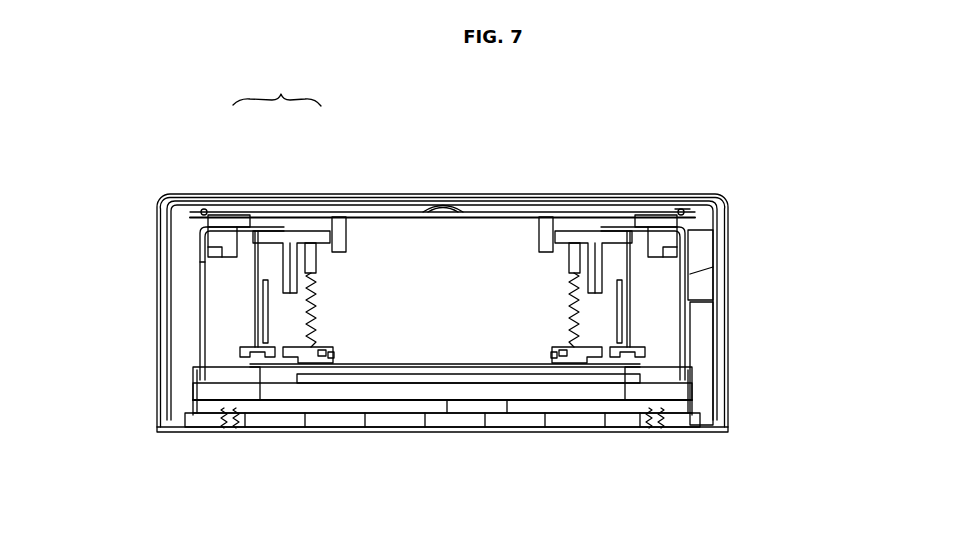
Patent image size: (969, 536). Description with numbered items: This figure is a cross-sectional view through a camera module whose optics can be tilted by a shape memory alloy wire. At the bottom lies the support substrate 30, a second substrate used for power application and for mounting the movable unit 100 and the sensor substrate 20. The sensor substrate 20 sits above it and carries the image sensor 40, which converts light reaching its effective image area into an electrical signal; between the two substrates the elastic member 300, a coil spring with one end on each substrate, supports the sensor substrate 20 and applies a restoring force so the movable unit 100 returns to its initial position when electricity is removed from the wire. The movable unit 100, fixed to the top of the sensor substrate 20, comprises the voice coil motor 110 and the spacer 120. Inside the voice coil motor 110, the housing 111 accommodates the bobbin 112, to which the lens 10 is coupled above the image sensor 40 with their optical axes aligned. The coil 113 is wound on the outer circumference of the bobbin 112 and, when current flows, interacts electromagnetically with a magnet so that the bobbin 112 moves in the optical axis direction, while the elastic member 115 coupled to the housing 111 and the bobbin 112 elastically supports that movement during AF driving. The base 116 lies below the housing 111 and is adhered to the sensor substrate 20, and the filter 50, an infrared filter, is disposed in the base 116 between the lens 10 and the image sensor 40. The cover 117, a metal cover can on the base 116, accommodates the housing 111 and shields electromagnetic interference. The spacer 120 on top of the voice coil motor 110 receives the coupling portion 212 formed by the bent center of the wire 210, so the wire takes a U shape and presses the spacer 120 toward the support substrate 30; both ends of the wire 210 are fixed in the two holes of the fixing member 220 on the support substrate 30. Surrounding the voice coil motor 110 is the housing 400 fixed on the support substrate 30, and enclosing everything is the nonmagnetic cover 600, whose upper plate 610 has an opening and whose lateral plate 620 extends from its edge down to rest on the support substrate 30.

The lens 10 is at (470, 275).
The sensor substrate 20 is at (517, 420).
The support substrate 30 is at (577, 432).
The image sensor 40 is at (337, 420).
The filter 50 is at (302, 420).
The movable unit 100 is at (277, 91).
The voice coil motor 110 is at (263, 215).
The housing 111 is at (207, 292).
The bobbin 112 is at (283, 323).
The coil 113 is at (262, 314).
The elastic member 115 is at (278, 247).
The base 116 is at (220, 382).
The cover 117 is at (200, 261).
The spacer 120 is at (223, 218).
The wire 210 is at (201, 210).
The coupling portion 212 is at (173, 204).
The fixing member 220 is at (202, 432).
The elastic member 300 is at (238, 432).
The housing 400 is at (705, 347).
The cover 600 is at (738, 106).
The upper plate 610 is at (682, 210).
The lateral plate 620 is at (726, 245).